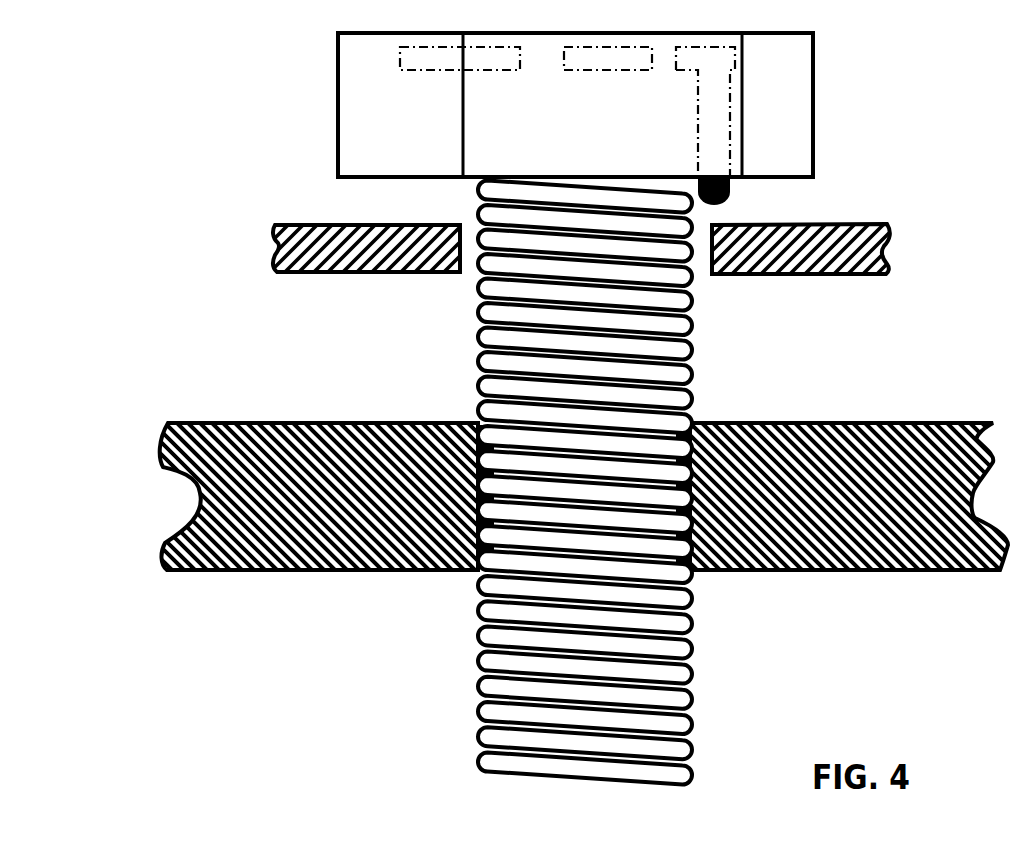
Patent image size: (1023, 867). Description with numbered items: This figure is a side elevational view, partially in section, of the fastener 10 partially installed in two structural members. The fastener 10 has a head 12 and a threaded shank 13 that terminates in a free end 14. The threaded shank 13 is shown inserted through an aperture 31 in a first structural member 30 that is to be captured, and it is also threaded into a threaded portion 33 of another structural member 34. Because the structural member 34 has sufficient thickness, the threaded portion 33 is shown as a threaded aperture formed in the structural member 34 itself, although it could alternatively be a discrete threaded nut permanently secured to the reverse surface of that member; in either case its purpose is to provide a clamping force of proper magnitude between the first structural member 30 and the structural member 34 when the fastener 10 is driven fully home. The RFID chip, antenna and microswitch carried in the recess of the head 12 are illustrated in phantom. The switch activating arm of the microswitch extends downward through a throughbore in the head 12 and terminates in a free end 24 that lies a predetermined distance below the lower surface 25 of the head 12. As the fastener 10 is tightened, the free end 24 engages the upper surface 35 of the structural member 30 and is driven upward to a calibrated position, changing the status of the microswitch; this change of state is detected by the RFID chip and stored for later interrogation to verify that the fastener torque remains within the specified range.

The fastener 10 is at (578, 423).
The head 12 is at (785, 90).
The threaded shank 13 is at (664, 378).
The free end 14 is at (578, 787).
The free end 24 is at (735, 200).
The lower surface 25 is at (780, 178).
The first structural member 30 is at (268, 251).
The aperture 31 is at (455, 273).
The threaded portion 33 is at (475, 468).
The structural member 34 is at (158, 546).
The upper surface 35 is at (870, 224).